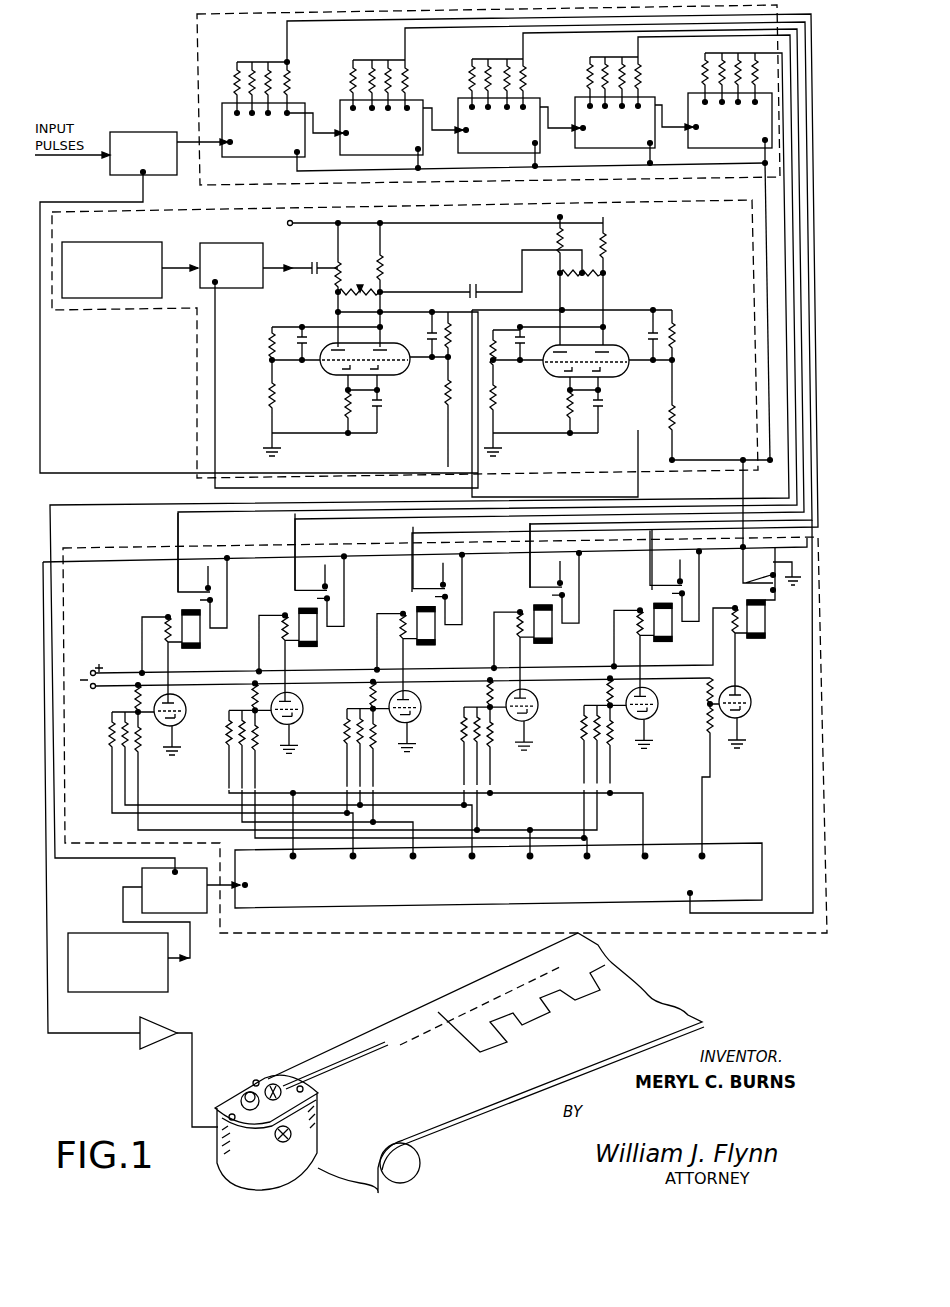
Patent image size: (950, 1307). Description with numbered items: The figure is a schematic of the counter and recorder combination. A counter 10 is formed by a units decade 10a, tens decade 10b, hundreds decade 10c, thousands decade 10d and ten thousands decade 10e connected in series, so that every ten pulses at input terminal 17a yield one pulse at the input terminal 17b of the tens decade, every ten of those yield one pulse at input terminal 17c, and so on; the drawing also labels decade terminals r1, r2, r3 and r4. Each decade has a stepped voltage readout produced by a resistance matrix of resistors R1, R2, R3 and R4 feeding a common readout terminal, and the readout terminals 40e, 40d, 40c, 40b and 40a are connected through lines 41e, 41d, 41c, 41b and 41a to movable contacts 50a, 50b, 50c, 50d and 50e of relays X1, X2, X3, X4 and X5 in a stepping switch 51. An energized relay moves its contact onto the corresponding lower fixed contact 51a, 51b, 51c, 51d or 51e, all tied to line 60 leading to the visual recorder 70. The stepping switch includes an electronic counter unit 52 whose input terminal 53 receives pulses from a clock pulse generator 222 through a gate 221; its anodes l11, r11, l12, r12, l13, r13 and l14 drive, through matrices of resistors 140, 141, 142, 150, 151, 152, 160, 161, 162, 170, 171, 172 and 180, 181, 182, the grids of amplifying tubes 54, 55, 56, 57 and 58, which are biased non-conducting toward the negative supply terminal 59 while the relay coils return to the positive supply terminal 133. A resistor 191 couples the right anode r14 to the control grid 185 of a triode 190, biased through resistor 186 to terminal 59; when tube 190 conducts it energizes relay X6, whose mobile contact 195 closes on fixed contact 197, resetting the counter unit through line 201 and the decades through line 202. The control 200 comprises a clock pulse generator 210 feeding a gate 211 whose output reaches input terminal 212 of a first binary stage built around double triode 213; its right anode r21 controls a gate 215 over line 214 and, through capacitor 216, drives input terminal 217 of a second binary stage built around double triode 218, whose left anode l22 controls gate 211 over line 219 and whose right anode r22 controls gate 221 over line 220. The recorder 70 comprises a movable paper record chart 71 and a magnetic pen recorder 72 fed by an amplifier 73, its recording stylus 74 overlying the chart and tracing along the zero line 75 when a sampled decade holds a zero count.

The counter 10 is at (196, 40).
The gate 215 is at (170, 132).
The units decade 10a is at (231, 106).
The tens decade 10b is at (341, 105).
The hundreds decade 10c is at (459, 103).
The thousands decade 10d is at (576, 100).
The ten thousands decade 10e is at (691, 98).
The resistor R1 is at (237, 90).
The resistor R2 is at (245, 68).
The resistor R3 is at (268, 70).
The resistor R4 is at (292, 70).
The decade output terminal r1 is at (235, 114).
The decade output terminal r2 is at (250, 116).
The decade output terminal r3 is at (268, 113).
The decade output terminal r4 is at (290, 113).
The readout terminal 40a is at (278, 54).
The readout terminal 40b is at (393, 50).
The readout terminal 40c is at (510, 50).
The readout terminal 40d is at (629, 49).
The readout terminal 40e is at (737, 48).
The line 41a is at (333, 23).
The line 41b is at (447, 29).
The line 41c is at (557, 34).
The line 41d is at (793, 248).
The line 41e is at (785, 208).
The input terminal 17a is at (230, 146).
The input terminal 17b is at (345, 136).
The input terminal 17c is at (465, 132).
The control for the counter and stepping switch 200 is at (197, 362).
The line 202 is at (770, 318).
The clock pulse generator 210 is at (140, 247).
The gate 211 is at (212, 247).
The input terminal 212 is at (360, 289).
The double triode 213 is at (333, 348).
The line 214 is at (400, 432).
The capacitor 216 is at (477, 289).
The input terminal 217 is at (592, 268).
The double triode 218 is at (557, 342).
The line 219 is at (478, 424).
The line 220 is at (638, 431).
The right anode r21 is at (386, 345).
The right anode r22 is at (612, 345).
The left anode l22 is at (570, 346).
The stepping switch 51 is at (171, 548).
The line 60 is at (80, 562).
The positive power supply terminal 133 is at (95, 670).
The negative supply terminal 59 is at (390, 692).
The movable contact 50a is at (199, 593).
The movable contact 50b is at (311, 552).
The movable contact 50c is at (429, 558).
The movable contact 50d is at (546, 555).
The movable contact 50e is at (666, 558).
The lower fixed contact 51a is at (208, 600).
The lower fixed contact 51b is at (302, 623).
The lower fixed contact 51c is at (420, 621).
The lower fixed contact 51d is at (537, 620).
The lower fixed contact 51e is at (657, 618).
The relay X1 is at (200, 632).
The relay X2 is at (317, 635).
The relay X3 is at (435, 634).
The relay X4 is at (552, 632).
The relay X5 is at (672, 630).
The relay X6 is at (765, 620).
The amplifying tube 54 is at (185, 703).
The amplifying tube 55 is at (277, 722).
The amplifying tube 56 is at (395, 721).
The amplifying tube 57 is at (512, 719).
The amplifying tube 58 is at (632, 717).
The resistor 140 is at (111, 727).
The resistor 141 is at (123, 745).
The resistor 142 is at (138, 752).
The resistor 150 is at (210, 749).
The resistor 151 is at (216, 749).
The resistor 152 is at (266, 734).
The resistor 160 is at (328, 748).
The resistor 161 is at (334, 748).
The resistor 162 is at (384, 732).
The resistor 170 is at (445, 746).
The resistor 171 is at (451, 746).
The resistor 172 is at (501, 731).
The resistor 180 is at (565, 744).
The resistor 181 is at (571, 744).
The resistor 182 is at (621, 729).
The control grid 185 is at (752, 699).
The resistor 186 is at (710, 690).
The triode 190 is at (748, 692).
The resistor 191 is at (712, 728).
The mobile contact 195 is at (757, 580).
The fixed contact 197 is at (773, 588).
The line 201 is at (812, 697).
The electronic counter unit 52 is at (350, 898).
The input terminal 53 is at (248, 888).
The gate 221 is at (197, 912).
The clock pulse generator 222 is at (140, 990).
The amplifier 73 is at (160, 1022).
The left anode l11 is at (293, 856).
The right anode r11 is at (353, 856).
The left anode l12 is at (413, 856).
The right anode r12 is at (472, 856).
The left anode l13 is at (530, 856).
The right anode r13 is at (587, 856).
The left anode l14 is at (645, 856).
The right anode r14 is at (702, 856).
The visual recorder 70 is at (309, 1023).
The movable paper record chart 71 is at (527, 1083).
The magnetic pen recorder 72 is at (268, 1082).
The recording stylus 74 is at (378, 1030).
The zero line 75 is at (500, 1005).